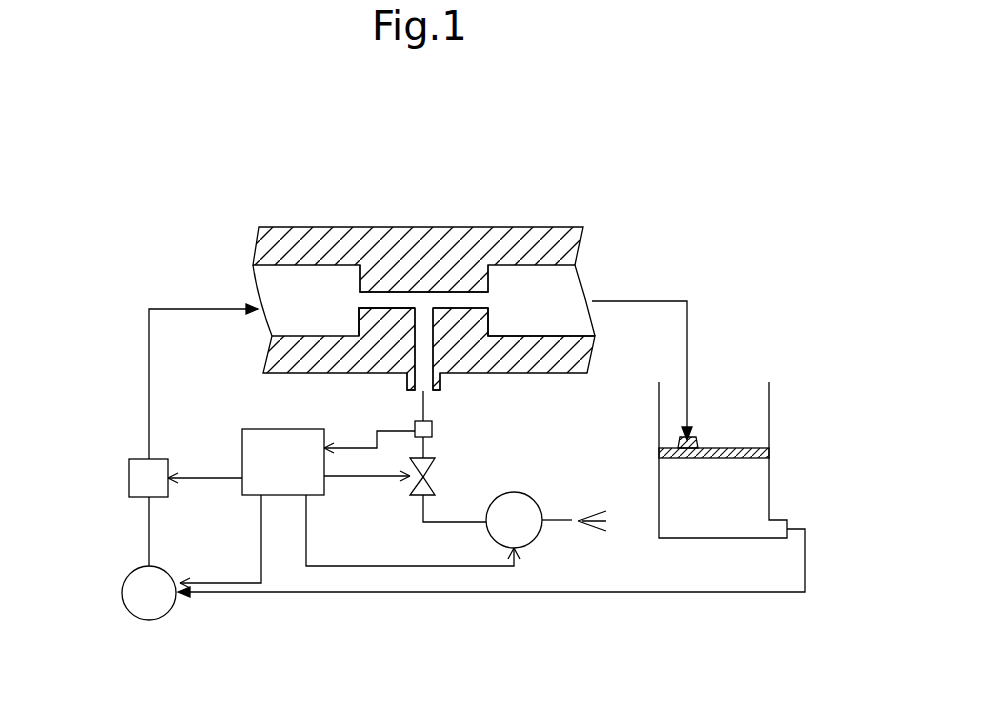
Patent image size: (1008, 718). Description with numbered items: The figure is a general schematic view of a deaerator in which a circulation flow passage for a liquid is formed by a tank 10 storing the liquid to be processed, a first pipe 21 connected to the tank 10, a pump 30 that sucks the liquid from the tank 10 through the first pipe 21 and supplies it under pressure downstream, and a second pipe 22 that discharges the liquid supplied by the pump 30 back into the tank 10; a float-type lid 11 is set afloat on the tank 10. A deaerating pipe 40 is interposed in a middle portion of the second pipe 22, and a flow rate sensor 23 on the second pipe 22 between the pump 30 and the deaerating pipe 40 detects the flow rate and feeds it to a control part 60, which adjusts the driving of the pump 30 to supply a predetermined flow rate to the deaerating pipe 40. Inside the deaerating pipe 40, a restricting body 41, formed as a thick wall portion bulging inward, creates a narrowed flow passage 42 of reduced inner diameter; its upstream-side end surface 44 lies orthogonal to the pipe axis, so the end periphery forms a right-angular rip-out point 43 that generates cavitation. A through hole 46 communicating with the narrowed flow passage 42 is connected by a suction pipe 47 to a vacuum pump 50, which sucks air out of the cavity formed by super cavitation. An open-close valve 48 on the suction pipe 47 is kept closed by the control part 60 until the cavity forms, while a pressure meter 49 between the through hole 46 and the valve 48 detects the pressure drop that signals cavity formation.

The tank 10 is at (769, 418).
The float-type lid 11 is at (750, 450).
The first pipe 21 is at (688, 593).
The second pipe 22 is at (149, 528).
The flow rate sensor 23 is at (129, 478).
The pump 30 is at (175, 608).
The deaerating pipe 40 is at (280, 227).
The restricting body 41 is at (488, 281).
The narrowed flow passage 42 is at (490, 303).
The rip-out point 43 is at (357, 312).
The upstream-side end surface 44 is at (357, 318).
The through hole 46 is at (437, 352).
The suction pipe 47 is at (433, 431).
The open-close valve 48 is at (437, 478).
The pressure meter 49 is at (428, 447).
The vacuum pump 50 is at (538, 535).
The control part 60 is at (324, 486).